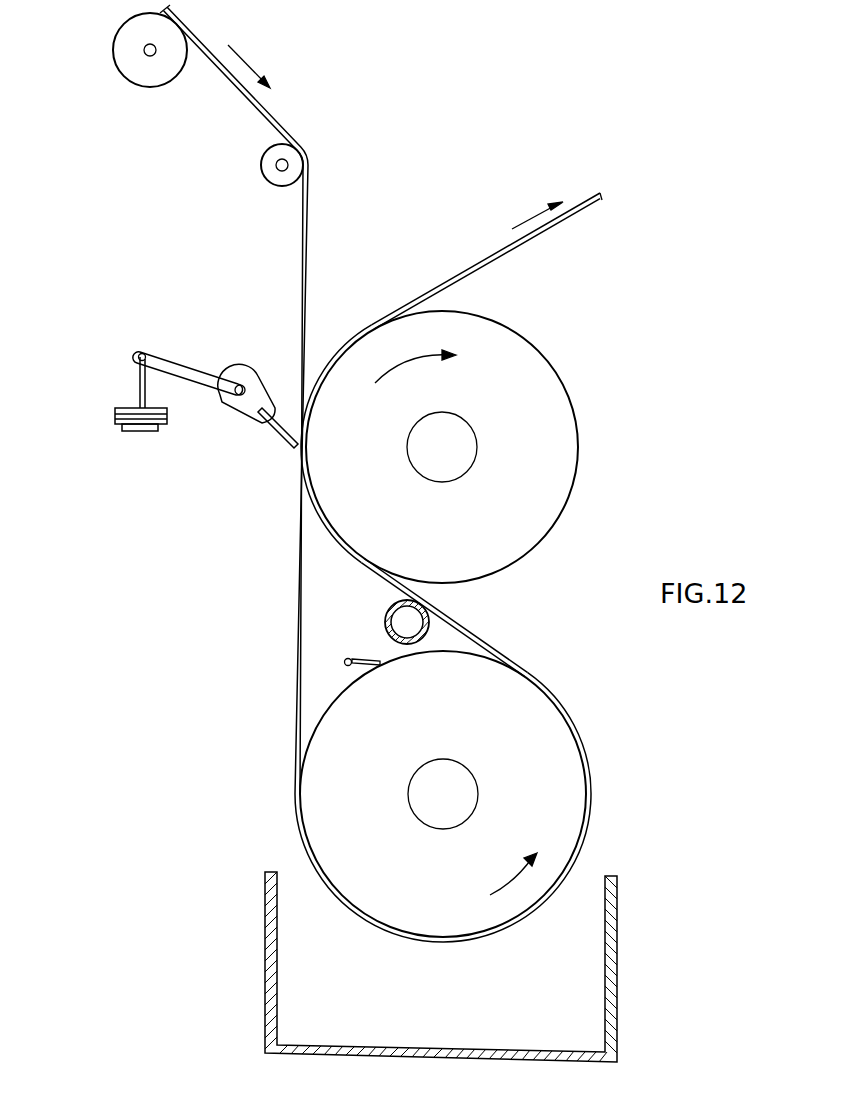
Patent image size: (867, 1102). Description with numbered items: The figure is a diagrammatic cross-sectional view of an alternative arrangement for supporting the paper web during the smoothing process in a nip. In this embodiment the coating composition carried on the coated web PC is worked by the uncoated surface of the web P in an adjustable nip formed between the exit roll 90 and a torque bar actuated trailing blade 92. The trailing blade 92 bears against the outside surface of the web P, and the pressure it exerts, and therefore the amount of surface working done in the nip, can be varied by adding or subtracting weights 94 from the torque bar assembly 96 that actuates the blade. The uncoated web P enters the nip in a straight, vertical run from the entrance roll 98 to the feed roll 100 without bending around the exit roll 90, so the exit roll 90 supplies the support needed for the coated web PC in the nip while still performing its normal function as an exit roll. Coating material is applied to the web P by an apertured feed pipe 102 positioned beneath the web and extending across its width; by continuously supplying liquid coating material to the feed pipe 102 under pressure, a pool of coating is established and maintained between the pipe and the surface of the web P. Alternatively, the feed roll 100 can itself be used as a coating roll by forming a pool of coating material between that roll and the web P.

The exit roll 90 is at (540, 470).
The torque bar actuated trailing blade 92 is at (273, 430).
The weights 94 is at (120, 414).
The torque bar assembly 96 is at (186, 356).
The entrance roll 98 is at (271, 170).
The feed roll 100 is at (522, 702).
The apertured feed pipe 102 is at (387, 616).
The uncoated web P is at (267, 113).
The coated web PC is at (567, 228).